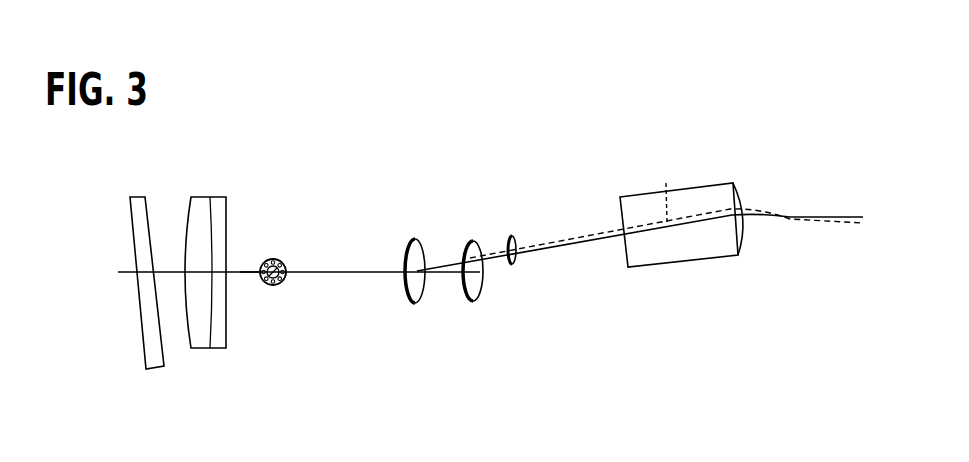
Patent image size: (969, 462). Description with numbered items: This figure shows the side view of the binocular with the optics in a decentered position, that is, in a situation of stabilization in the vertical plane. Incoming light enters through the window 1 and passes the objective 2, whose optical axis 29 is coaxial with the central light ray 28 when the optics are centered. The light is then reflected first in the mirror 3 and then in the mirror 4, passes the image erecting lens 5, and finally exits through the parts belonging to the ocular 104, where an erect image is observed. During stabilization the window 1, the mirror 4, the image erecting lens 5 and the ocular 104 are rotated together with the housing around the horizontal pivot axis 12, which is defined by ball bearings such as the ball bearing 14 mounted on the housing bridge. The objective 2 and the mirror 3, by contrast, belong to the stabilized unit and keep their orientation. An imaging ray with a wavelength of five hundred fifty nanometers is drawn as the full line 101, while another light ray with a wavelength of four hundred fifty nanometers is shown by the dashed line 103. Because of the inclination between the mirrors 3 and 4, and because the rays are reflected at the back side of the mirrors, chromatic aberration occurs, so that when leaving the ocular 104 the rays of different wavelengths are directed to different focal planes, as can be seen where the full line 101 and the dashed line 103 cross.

The window 1 is at (139, 196).
The objective 2 is at (198, 203).
The mirror 3 is at (477, 295).
The mirror 4 is at (405, 248).
The image erecting lens 5 is at (512, 238).
The horizontal pivot axis 12 is at (285, 262).
The ball bearing 14 is at (280, 285).
The light ray 28 is at (120, 275).
The optical axis 29 is at (245, 270).
The full line 101 is at (660, 227).
The dashed line 103 is at (671, 189).
The ocular parts 104 is at (708, 200).